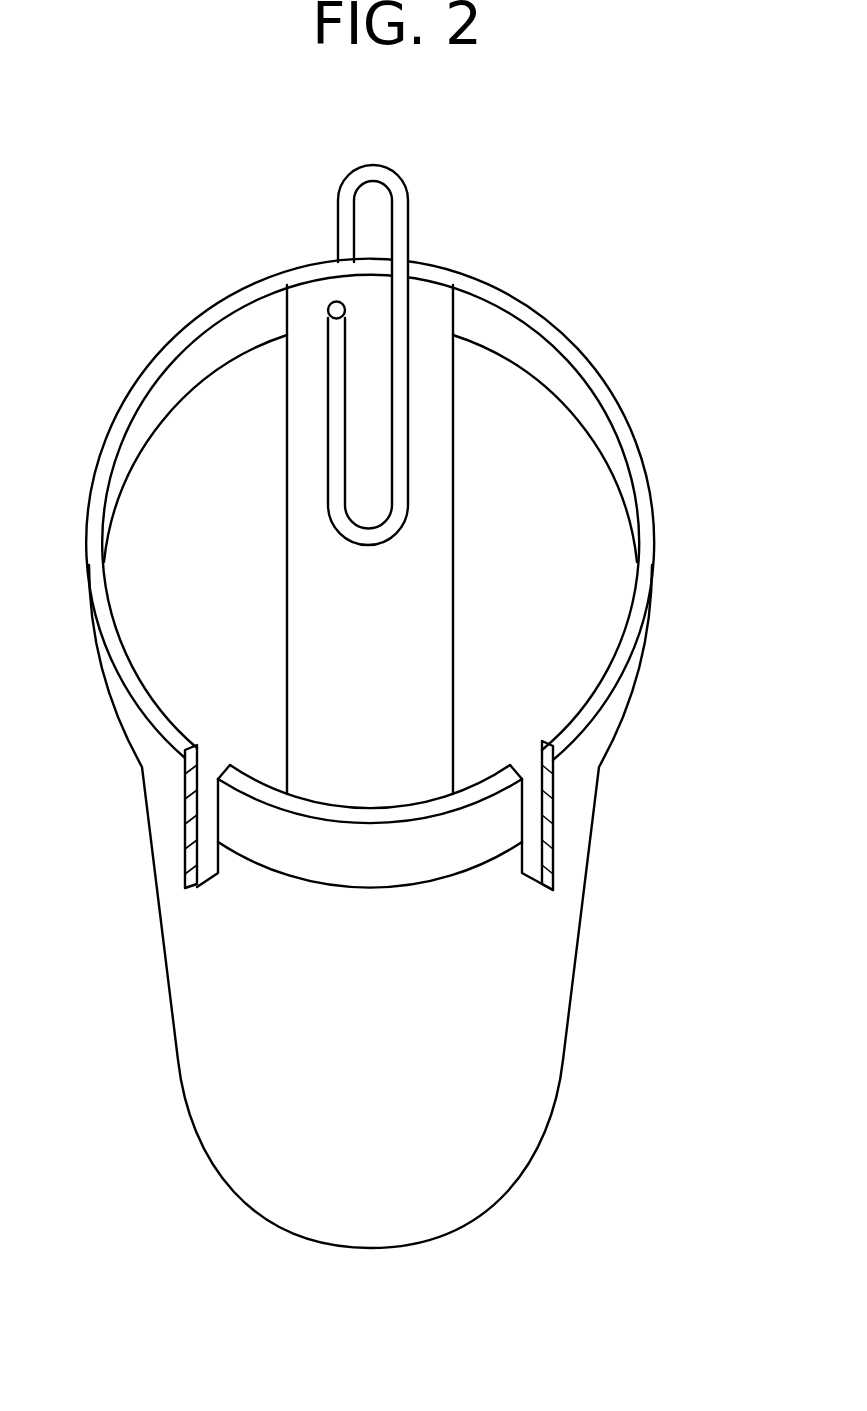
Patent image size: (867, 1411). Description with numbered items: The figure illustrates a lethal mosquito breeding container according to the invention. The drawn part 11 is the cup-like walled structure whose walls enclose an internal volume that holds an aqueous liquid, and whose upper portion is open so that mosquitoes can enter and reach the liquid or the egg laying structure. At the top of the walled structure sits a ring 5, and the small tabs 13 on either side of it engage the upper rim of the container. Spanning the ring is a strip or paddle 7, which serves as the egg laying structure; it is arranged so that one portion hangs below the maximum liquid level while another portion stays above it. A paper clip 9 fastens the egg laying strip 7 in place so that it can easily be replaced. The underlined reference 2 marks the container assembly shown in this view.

The cross-section reference 2 is at (546, 599).
The ring 5 is at (592, 548).
The channel 7 is at (437, 358).
The tube 9 is at (408, 235).
The cup body 11 is at (525, 1038).
The tab 13 is at (530, 817).